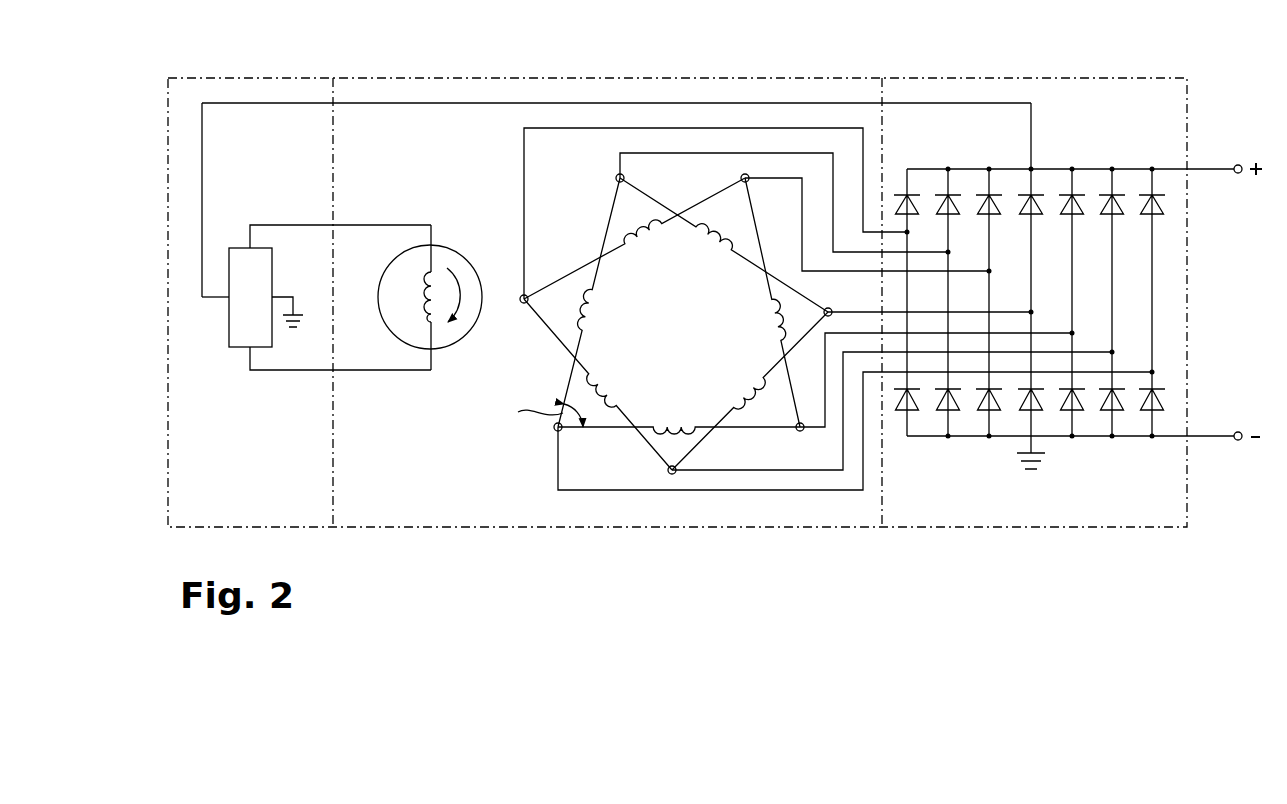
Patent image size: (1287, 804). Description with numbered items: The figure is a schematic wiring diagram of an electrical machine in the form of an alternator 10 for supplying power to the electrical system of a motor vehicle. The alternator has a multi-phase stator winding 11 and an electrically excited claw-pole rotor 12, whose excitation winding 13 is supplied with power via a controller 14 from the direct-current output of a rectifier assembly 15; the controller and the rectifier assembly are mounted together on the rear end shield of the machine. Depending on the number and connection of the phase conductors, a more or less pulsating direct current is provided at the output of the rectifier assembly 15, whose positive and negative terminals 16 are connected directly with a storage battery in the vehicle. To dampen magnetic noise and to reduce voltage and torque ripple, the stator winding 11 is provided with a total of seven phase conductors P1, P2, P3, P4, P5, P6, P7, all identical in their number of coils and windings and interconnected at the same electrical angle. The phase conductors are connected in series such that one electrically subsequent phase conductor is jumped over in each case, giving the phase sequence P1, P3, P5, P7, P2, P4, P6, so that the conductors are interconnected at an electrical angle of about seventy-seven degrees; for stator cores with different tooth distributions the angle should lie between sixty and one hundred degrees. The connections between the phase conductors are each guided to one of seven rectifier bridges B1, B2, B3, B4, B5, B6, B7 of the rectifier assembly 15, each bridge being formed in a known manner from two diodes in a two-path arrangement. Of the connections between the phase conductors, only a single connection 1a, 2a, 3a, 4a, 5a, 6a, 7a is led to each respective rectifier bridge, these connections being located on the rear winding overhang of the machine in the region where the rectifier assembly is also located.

The alternator 10 is at (476, 120).
The stator winding 11 is at (580, 250).
The claw-pole rotor 12 is at (400, 268).
The excitation winding 13 is at (432, 305).
The controller 14 is at (308, 120).
The rectifier assembly 15 is at (1120, 70).
The positive and negative terminals 16 is at (1239, 164).
The connection 1a is at (632, 128).
The connection 2a is at (680, 153).
The connection 3a is at (760, 178).
The connection 4a is at (836, 312).
The connection 5a is at (812, 432).
The connection 6a is at (767, 472).
The connection 7a is at (710, 492).
The phase conductor P1 is at (618, 388).
The phase conductor P2 is at (600, 314).
The phase conductor P3 is at (658, 256).
The phase conductor P4 is at (714, 262).
The phase conductor P5 is at (764, 318).
The phase conductor P6 is at (742, 372).
The phase conductor P7 is at (682, 404).
The rectifier bridge B1 is at (910, 366).
The rectifier bridge B2 is at (951, 366).
The rectifier bridge B3 is at (992, 366).
The rectifier bridge B4 is at (1034, 366).
The rectifier bridge B5 is at (1074, 290).
The rectifier bridge B6 is at (1114, 305).
The rectifier bridge B7 is at (1154, 338).